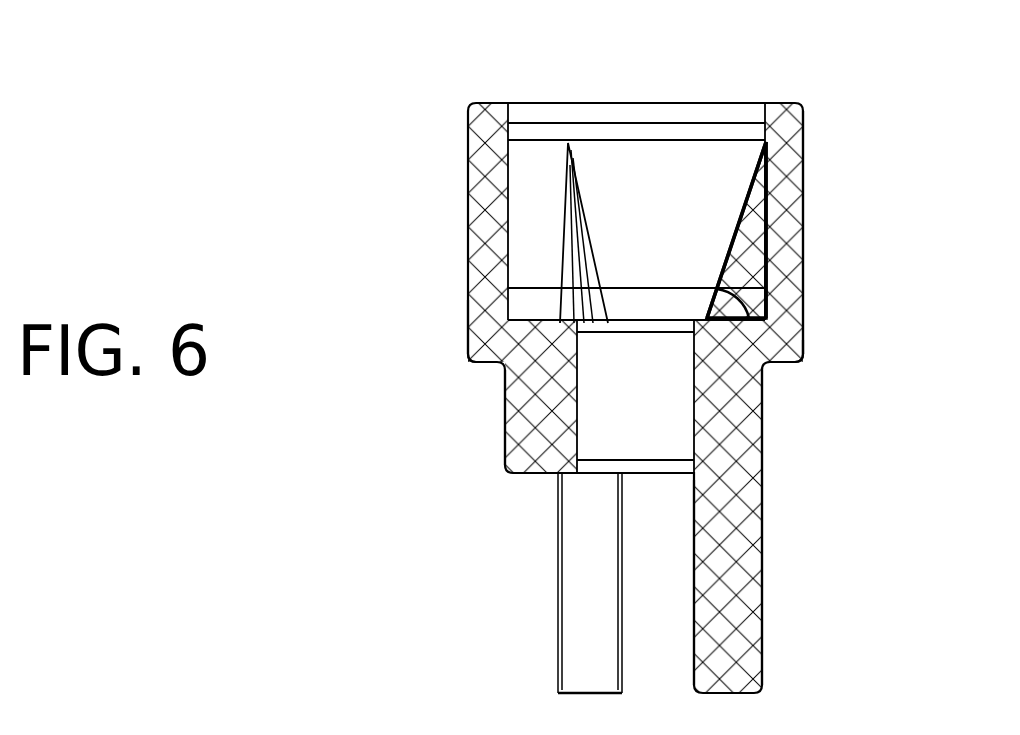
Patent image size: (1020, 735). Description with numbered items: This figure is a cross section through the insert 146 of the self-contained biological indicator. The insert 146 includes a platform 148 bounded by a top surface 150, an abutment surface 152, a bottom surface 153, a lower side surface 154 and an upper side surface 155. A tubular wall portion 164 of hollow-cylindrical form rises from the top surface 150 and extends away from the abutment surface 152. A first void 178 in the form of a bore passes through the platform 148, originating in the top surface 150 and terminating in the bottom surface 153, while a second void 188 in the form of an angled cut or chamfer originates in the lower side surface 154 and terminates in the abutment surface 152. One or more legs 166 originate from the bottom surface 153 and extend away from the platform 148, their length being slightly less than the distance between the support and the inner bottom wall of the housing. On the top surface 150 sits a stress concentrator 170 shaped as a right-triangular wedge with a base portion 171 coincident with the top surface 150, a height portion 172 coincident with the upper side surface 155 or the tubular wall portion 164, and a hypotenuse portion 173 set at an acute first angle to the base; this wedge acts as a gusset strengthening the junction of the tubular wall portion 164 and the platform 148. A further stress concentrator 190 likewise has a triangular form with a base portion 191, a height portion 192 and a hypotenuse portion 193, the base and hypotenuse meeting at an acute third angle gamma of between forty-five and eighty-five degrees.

The insert 146 is at (341, 231).
The platform 148 is at (848, 318).
The top surface 150 is at (553, 320).
The abutment surface 152 is at (780, 363).
The bottom surface 153 is at (522, 473).
The lower side surface 154 is at (510, 410).
The upper side surface 155 is at (800, 343).
The tubular wall portion 164 is at (636, 185).
The leg 166 is at (705, 608).
The stress concentrator 170 is at (571, 238).
The base portion 171 is at (565, 323).
The height portion 172 is at (562, 230).
The hypotenuse portion 173 is at (575, 183).
The first void 178 is at (656, 341).
The second void 188 is at (477, 333).
The stress concentrator 190 is at (750, 227).
The base portion 191 is at (760, 310).
The height portion 192 is at (767, 257).
The hypotenuse portion 193 is at (750, 185).